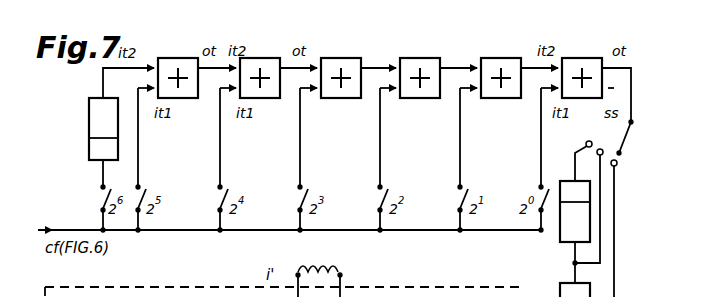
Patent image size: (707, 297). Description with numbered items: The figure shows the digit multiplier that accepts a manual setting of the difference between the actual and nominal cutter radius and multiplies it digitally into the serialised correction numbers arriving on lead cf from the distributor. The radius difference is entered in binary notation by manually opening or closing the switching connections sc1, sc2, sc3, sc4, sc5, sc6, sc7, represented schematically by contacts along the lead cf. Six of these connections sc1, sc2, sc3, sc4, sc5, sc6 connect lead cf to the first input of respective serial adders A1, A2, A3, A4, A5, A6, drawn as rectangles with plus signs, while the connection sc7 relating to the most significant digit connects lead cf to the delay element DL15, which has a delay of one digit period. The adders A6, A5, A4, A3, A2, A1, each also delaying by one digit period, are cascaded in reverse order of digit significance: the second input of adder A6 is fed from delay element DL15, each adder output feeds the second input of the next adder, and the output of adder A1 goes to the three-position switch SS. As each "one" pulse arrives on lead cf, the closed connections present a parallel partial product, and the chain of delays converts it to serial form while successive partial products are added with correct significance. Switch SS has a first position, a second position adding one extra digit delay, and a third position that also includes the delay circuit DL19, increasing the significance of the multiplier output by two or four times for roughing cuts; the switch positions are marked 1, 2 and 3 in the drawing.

The serial adder A1 is at (586, 58).
The serial adder A2 is at (498, 58).
The serial adder A3 is at (419, 58).
The serial adder A4 is at (340, 58).
The serial adder A5 is at (266, 58).
The serial adder A6 is at (174, 58).
The delay element DL15 is at (89, 108).
The delay circuit DL19 is at (560, 240).
The switching connection sc1 is at (541, 134).
The switching connection sc2 is at (460, 166).
The switching connection sc3 is at (380, 166).
The switching connection sc4 is at (320, 150).
The switching connection sc5 is at (220, 158).
The switching connection sc6 is at (138, 158).
The switching connection sc7 is at (103, 175).
The switch position 1 is at (619, 228).
The switch position 2 is at (589, 206).
The switch position 3 is at (583, 154).